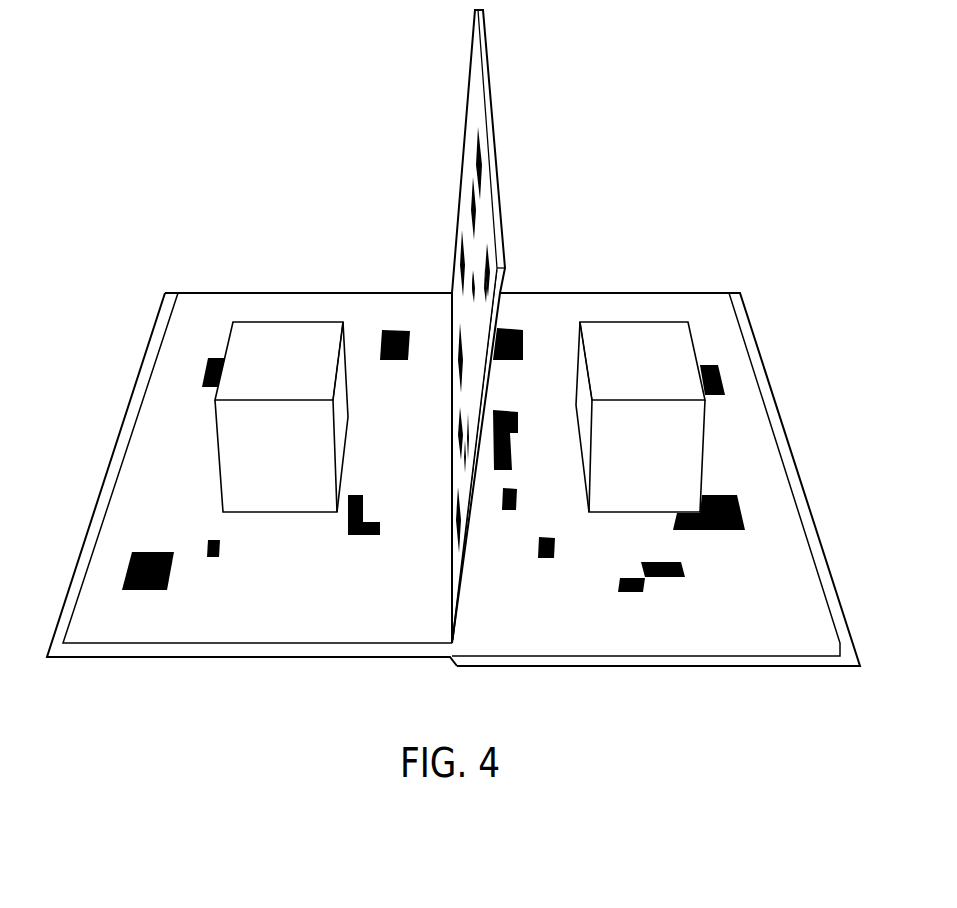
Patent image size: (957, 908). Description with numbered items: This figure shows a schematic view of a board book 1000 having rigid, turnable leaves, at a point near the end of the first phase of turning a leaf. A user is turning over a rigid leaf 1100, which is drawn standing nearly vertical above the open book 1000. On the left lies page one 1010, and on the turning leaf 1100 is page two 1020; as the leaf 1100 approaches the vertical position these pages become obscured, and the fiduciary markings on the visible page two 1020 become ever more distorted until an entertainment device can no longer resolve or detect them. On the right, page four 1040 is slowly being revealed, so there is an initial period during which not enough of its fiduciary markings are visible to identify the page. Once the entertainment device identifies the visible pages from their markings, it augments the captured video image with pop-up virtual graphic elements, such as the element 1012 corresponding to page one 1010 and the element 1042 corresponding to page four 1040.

The book 1000 is at (462, 477).
The page 1010 is at (248, 449).
The pop-up virtual graphic element 1012 is at (285, 355).
The page 1020 is at (475, 113).
The page 1040 is at (656, 449).
The pop-up virtual graphic element 1042 is at (646, 355).
The rigid leaf 1100 is at (469, 323).